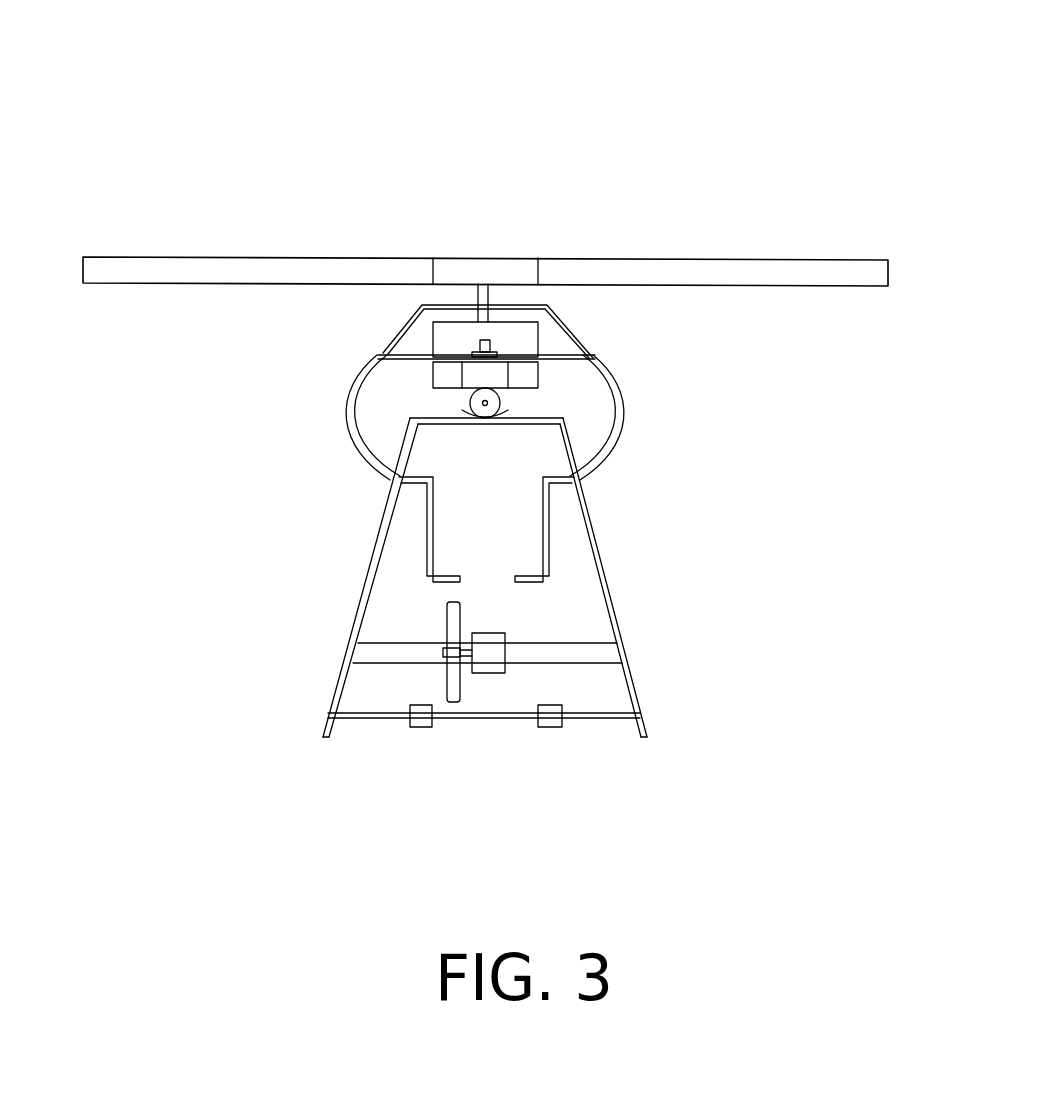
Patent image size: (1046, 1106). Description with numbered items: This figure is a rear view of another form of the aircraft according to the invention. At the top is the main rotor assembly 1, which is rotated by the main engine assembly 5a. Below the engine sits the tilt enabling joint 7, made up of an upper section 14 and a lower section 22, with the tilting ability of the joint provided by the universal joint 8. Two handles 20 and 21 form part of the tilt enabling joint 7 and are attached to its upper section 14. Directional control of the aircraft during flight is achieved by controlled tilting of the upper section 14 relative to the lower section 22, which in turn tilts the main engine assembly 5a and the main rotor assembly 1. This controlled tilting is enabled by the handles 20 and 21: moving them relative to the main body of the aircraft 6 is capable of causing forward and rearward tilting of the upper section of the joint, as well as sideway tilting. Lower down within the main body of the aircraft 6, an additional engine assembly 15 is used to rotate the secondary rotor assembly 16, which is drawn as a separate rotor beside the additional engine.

The main rotor assembly 1 is at (572, 230).
The main engine assembly 5a is at (465, 330).
The upper section of the tilt enabling joint 14 is at (418, 355).
The universal joint 8 is at (418, 390).
The handle 20 is at (338, 425).
The handle 21 is at (628, 445).
The tilt enabling joint 7 is at (750, 390).
The lower section of the tilt enabling joint 22 is at (540, 418).
The secondary rotor assembly 16 is at (448, 678).
The additional engine assembly 15 is at (492, 653).
The main body of the aircraft 6 is at (588, 765).